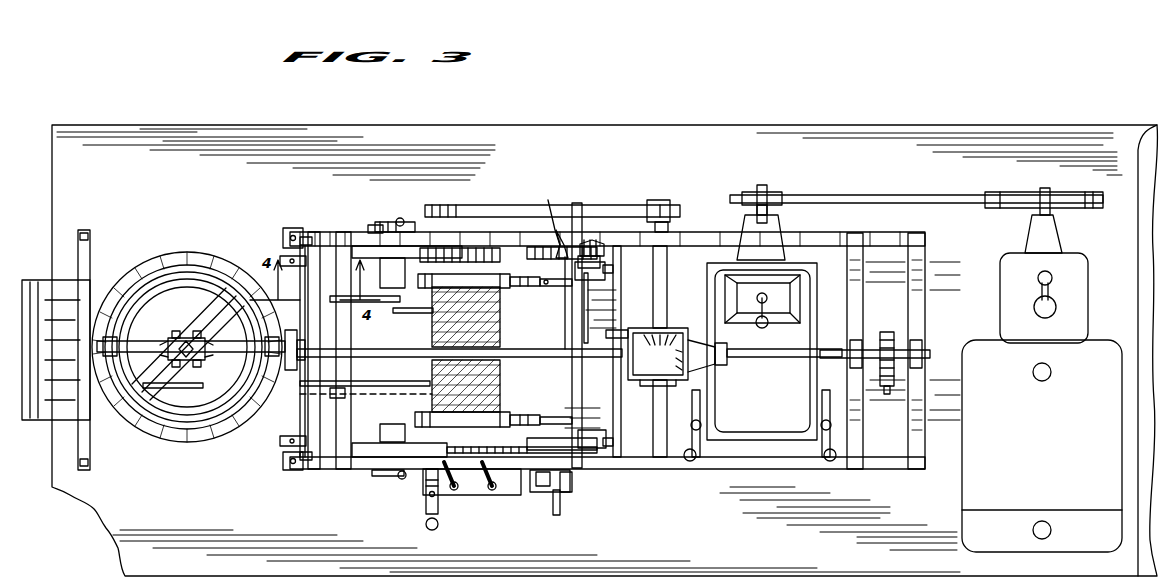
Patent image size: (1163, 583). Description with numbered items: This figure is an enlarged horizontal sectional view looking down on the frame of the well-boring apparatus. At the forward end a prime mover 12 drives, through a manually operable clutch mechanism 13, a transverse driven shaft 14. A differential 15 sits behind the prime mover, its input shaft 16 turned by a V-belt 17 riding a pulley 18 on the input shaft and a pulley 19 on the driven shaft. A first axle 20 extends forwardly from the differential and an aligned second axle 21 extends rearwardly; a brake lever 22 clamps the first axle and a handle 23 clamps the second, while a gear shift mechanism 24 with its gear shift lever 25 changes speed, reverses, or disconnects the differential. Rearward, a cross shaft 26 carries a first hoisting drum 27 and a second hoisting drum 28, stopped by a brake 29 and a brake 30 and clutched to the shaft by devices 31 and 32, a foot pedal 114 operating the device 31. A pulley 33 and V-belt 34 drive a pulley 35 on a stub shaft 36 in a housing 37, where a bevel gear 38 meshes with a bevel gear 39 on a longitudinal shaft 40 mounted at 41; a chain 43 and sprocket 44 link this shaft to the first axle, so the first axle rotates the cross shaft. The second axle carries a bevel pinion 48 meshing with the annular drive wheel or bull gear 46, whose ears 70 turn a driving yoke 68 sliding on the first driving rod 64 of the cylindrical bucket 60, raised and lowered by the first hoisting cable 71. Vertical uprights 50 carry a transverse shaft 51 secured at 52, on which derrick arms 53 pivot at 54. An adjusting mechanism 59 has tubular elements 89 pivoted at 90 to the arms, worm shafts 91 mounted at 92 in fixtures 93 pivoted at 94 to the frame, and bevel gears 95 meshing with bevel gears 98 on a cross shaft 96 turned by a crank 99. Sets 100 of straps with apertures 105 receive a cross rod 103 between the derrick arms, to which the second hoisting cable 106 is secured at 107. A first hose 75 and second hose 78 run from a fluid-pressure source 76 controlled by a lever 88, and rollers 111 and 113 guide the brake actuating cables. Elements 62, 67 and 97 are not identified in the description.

The prime mover 12 is at (975, 494).
The clutch mechanism 13 is at (1054, 292).
The driven shaft 14 is at (1058, 214).
The differential 15 is at (762, 351).
The input shaft 16 is at (748, 211).
The V-belt 17 is at (930, 192).
The pulley 18 is at (778, 190).
The pulley 19 is at (1018, 204).
The first axle 20 is at (930, 350).
The second axle 21 is at (566, 352).
The brake lever 22 is at (850, 426).
The handle 23 is at (690, 462).
The gear shift mechanism 24 is at (785, 282).
The gear shift lever 25 is at (754, 325).
The cross shaft 26 is at (420, 224).
The first hoisting drum 27 is at (494, 347).
The second hoisting drum 28 is at (500, 368).
The brake 29 is at (500, 288).
The brake 30 is at (500, 413).
The device 31 is at (392, 224).
The device 32 is at (400, 480).
The pulley 33 is at (500, 205).
The V-belt 34 is at (630, 210).
The pulley 35 is at (670, 224).
The stub shaft 36 is at (663, 322).
The housing 37 is at (650, 382).
The bevel gear 38 is at (648, 332).
The bevel gear 39 is at (674, 360).
The longitudinal shaft 40 is at (760, 358).
The rotatable mounting 41 is at (855, 345).
The chain 43 is at (888, 394).
The sprocket 44 is at (895, 334).
The annular drive wheel or bull gear 46 is at (242, 262).
The bevel pinion 48 is at (290, 305).
The vertical uprights 50 is at (328, 232).
The transverse shaft 51 is at (308, 392).
The securing points 52 is at (295, 232).
The derrick arms 53 is at (290, 236).
The pivotal supports 54 is at (345, 232).
The adjusting mechanism 59 is at (546, 490).
The cylindrical bucket 60 is at (214, 422).
The bracket 62 is at (120, 420).
The first driving rod 64 is at (187, 300).
The rod 67 is at (192, 365).
The driving yoke 68 is at (178, 345).
The ears 70 is at (180, 352).
The first hoisting cable 71 is at (416, 309).
The first hose 75 is at (492, 492).
The source of fluid under pressure 76 is at (470, 496).
The second hose 78 is at (455, 492).
The lever 88 is at (426, 510).
The tubular elements 89 is at (366, 278).
The pivotal securing points 90 is at (356, 246).
The worm shaft 91 is at (492, 248).
The rotatable mounting 92 is at (546, 247).
The fixture 93 is at (592, 262).
The pivot 94 is at (632, 264).
The bevel gears 95 is at (556, 202).
The cross shaft 96 is at (586, 348).
The vertical shaft 97 is at (574, 212).
The bevel gears 98 is at (590, 240).
The crank 99 is at (588, 492).
The sets of straps 100 is at (282, 258).
The cross rod 103 is at (346, 386).
The apertures 105 is at (340, 305).
The second hoisting cable 106 is at (392, 385).
The securing point 107 is at (345, 392).
The roller 111 is at (833, 461).
The roller 113 is at (705, 452).
The foot pedal 114 is at (570, 496).